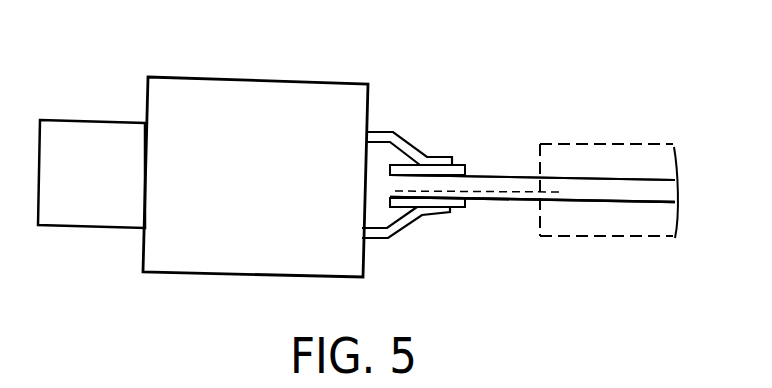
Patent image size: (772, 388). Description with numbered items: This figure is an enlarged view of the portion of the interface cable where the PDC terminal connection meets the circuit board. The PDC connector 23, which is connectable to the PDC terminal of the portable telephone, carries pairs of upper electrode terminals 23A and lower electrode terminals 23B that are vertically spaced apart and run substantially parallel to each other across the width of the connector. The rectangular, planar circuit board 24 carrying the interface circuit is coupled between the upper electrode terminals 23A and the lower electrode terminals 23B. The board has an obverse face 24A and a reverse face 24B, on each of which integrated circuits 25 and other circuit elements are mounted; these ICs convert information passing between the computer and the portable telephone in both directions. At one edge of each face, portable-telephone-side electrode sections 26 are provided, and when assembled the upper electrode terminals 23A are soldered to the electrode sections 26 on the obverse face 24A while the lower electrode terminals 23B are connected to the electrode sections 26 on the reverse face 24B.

The PDC connector 23 is at (253, 88).
The upper electrode terminals 23A is at (383, 124).
The lower electrode terminals 23B is at (382, 240).
The circuit board 24 is at (647, 203).
The obverse face 24A is at (507, 176).
The reverse face 24B is at (515, 203).
The integrated circuits 25 is at (602, 143).
The portable-telephone-side electrode sections 26 is at (458, 163).